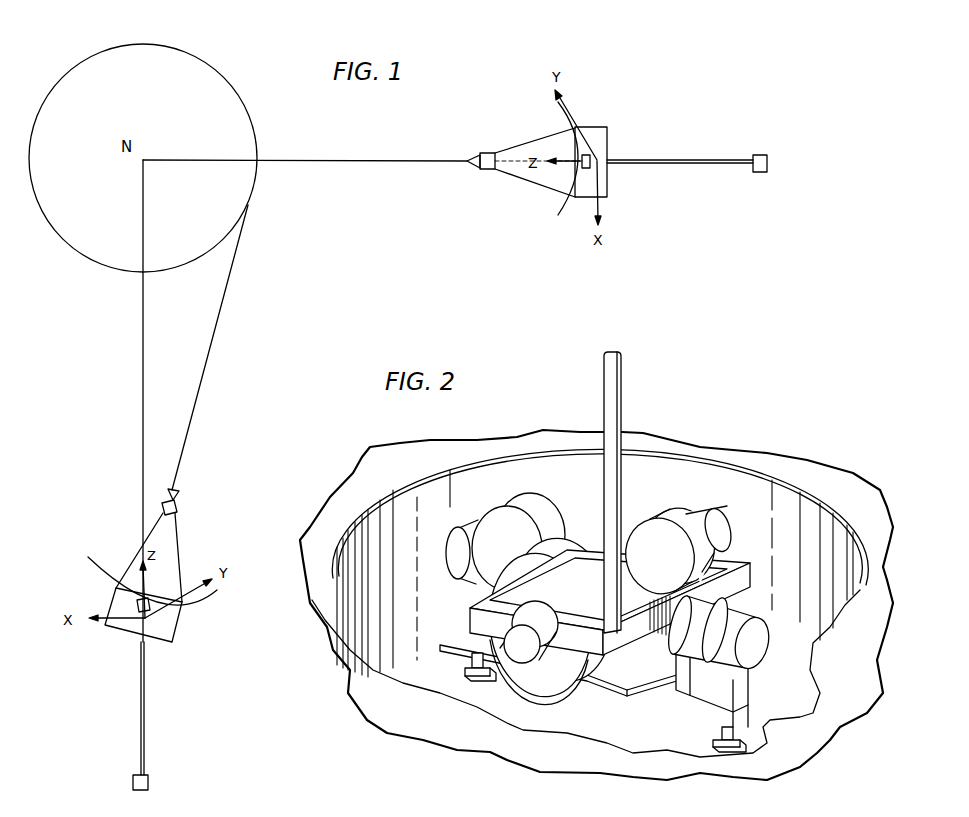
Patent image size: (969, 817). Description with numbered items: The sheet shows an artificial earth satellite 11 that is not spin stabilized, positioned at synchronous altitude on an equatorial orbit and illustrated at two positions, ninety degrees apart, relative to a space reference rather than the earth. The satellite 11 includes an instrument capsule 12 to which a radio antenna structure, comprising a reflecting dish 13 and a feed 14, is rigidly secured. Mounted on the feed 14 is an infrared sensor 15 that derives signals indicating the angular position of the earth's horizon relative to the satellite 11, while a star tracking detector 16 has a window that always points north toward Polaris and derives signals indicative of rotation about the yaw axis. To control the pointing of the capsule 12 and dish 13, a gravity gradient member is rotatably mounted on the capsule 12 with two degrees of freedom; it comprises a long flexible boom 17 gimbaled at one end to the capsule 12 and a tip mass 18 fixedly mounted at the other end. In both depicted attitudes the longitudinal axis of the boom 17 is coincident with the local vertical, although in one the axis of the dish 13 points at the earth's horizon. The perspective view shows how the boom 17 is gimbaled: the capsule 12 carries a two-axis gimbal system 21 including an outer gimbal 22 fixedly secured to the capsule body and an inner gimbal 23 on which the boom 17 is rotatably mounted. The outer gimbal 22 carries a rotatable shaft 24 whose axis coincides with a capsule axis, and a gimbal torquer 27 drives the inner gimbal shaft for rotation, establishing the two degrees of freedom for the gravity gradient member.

In FIG. 1, the artificial earth satellite 11 is at (535, 203).
In FIG. 1, the instrument capsule 12 is at (597, 135).
In FIG. 2, the instrument capsule 12 is at (837, 487).
In FIG. 1, the reflecting dish 13 is at (567, 210).
In FIG. 1, the feed 14 is at (490, 153).
In FIG. 1, the infrared sensor 15 is at (468, 165).
In FIG. 1, the star tracking detector 16 is at (587, 170).
In FIG. 1, the flexible boom 17 is at (695, 165).
In FIG. 2, the flexible boom 17 is at (603, 393).
In FIG. 1, the tip mass 18 is at (763, 155).
In FIG. 2, the two-axis gimbal system 21 is at (730, 479).
In FIG. 2, the outer gimbal 22 is at (630, 700).
In FIG. 2, the inner gimbal 23 is at (733, 558).
In FIG. 2, the rotatable shaft 24 is at (665, 647).
In FIG. 2, the gimbal torquer 27 is at (658, 527).